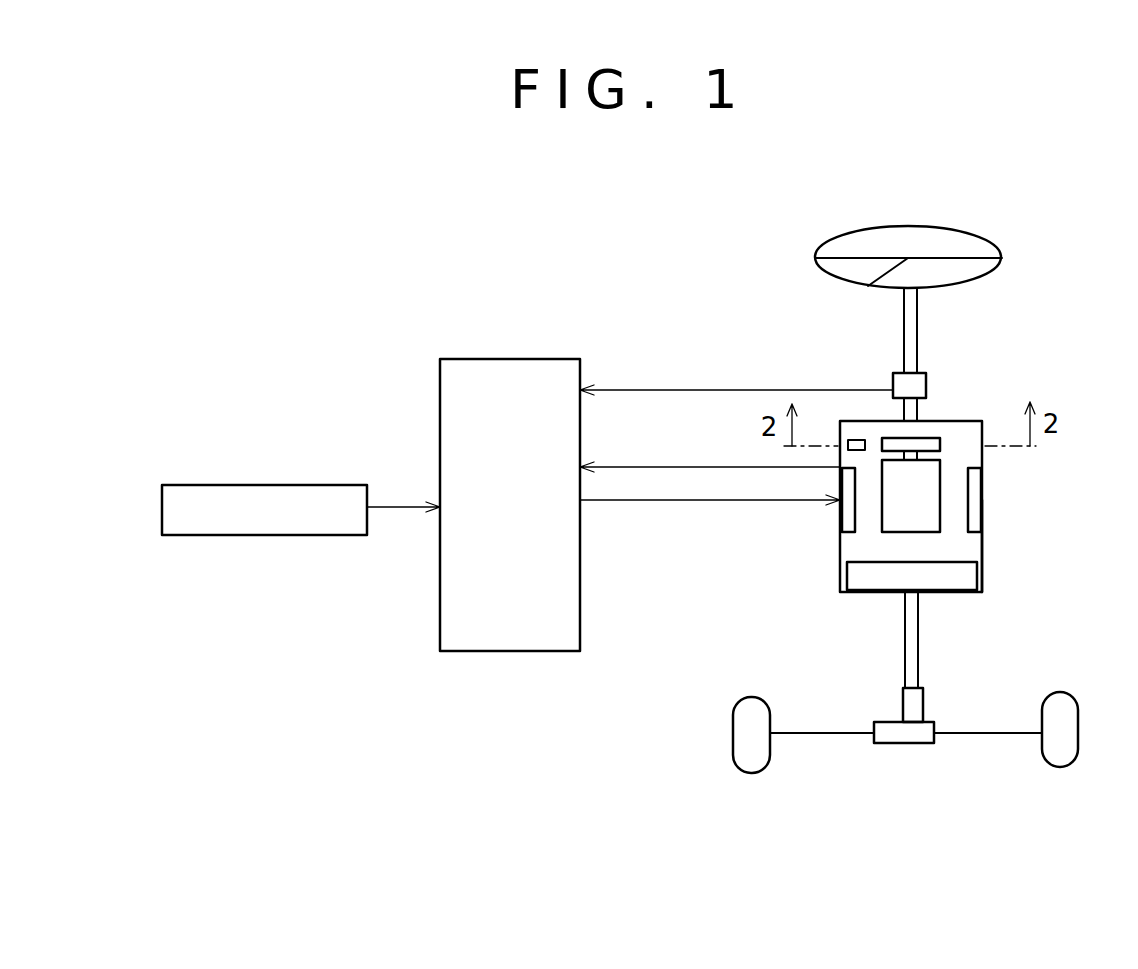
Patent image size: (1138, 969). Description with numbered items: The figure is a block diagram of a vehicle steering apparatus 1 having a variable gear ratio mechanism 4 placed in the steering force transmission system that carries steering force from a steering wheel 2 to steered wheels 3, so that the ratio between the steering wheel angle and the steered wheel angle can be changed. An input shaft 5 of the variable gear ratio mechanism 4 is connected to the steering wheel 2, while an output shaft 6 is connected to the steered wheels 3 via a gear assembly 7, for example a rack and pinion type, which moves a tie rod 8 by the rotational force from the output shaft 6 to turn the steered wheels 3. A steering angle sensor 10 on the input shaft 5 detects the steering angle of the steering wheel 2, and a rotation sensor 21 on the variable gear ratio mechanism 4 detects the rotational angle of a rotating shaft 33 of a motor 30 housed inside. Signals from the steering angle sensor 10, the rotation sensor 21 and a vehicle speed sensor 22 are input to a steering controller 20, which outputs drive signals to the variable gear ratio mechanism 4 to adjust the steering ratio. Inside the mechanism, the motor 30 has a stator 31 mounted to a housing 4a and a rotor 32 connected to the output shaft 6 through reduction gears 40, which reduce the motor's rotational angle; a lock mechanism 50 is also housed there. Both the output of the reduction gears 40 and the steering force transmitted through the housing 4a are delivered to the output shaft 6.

The vehicle steering apparatus 1 is at (645, 262).
The steering wheel 2 is at (965, 229).
The steered wheels 3 is at (752, 774).
The variable gear ratio mechanism 4 is at (988, 417).
The housing 4a is at (983, 553).
The input shaft 5 is at (917, 323).
The output shaft 6 is at (919, 648).
The gear assembly 7 is at (914, 745).
The tie rod 8 is at (1000, 734).
The steering angle sensor 10 is at (894, 374).
The steering controller 20 is at (500, 359).
The rotation sensor 21 is at (905, 459).
The vehicle speed sensor 22 is at (262, 485).
The motor 30 is at (1076, 478).
The stator 31 is at (985, 487).
The rotor 32 is at (930, 505).
The rotating shaft 33 is at (917, 452).
The reduction gears 40 is at (870, 585).
The lock mechanism 50 is at (893, 433).